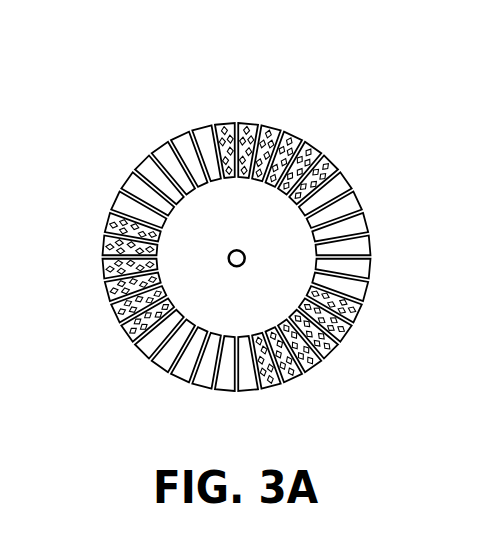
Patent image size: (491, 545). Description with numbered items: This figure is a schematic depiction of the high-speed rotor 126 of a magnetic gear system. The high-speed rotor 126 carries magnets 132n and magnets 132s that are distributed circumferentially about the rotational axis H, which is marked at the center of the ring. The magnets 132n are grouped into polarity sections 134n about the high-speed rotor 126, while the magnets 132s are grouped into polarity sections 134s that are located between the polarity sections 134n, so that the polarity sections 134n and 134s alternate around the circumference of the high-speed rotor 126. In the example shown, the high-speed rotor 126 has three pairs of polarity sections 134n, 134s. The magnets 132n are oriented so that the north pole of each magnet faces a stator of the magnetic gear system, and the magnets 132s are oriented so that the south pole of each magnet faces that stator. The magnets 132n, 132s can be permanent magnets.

The high-speed rotor 126 is at (252, 217).
The magnets 132s is at (194, 221).
The magnets 132n is at (279, 273).
The polarity sections 134s is at (94, 297).
The polarity sections 134n is at (181, 380).
The rotational axis H is at (223, 277).